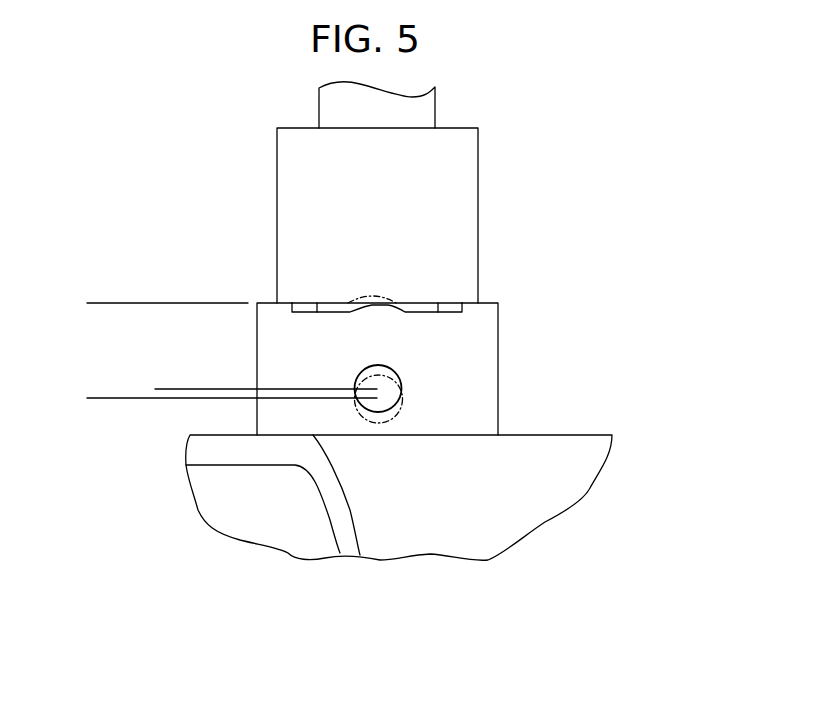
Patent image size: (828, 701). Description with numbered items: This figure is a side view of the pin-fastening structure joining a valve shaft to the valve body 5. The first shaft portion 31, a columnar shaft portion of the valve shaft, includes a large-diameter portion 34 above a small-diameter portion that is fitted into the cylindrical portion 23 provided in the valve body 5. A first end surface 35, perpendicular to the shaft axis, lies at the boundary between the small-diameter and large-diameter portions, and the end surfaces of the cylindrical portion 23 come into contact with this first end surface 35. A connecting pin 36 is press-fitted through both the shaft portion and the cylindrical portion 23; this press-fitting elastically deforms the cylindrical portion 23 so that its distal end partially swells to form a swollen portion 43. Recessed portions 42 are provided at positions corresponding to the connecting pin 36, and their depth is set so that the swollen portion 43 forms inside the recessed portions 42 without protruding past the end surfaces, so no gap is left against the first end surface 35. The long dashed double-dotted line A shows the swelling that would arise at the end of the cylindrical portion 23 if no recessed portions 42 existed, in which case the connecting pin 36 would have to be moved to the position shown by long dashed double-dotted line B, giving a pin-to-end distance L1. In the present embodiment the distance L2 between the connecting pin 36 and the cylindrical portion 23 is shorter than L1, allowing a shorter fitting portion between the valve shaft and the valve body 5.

The valve body 5 is at (596, 493).
The cylindrical portion 23 is at (498, 387).
The first shaft portion 31 is at (490, 155).
The large-diameter portion 34 is at (478, 190).
The first end surface 35 is at (466, 305).
The connecting pin 36 is at (396, 373).
The recessed portions 42 is at (333, 310).
The swollen portion 43 is at (398, 303).
The long dashed double-dotted line A is at (365, 295).
The long dashed double-dotted line B is at (396, 411).
The distance L1 is at (102, 312).
The distance L2 is at (166, 312).